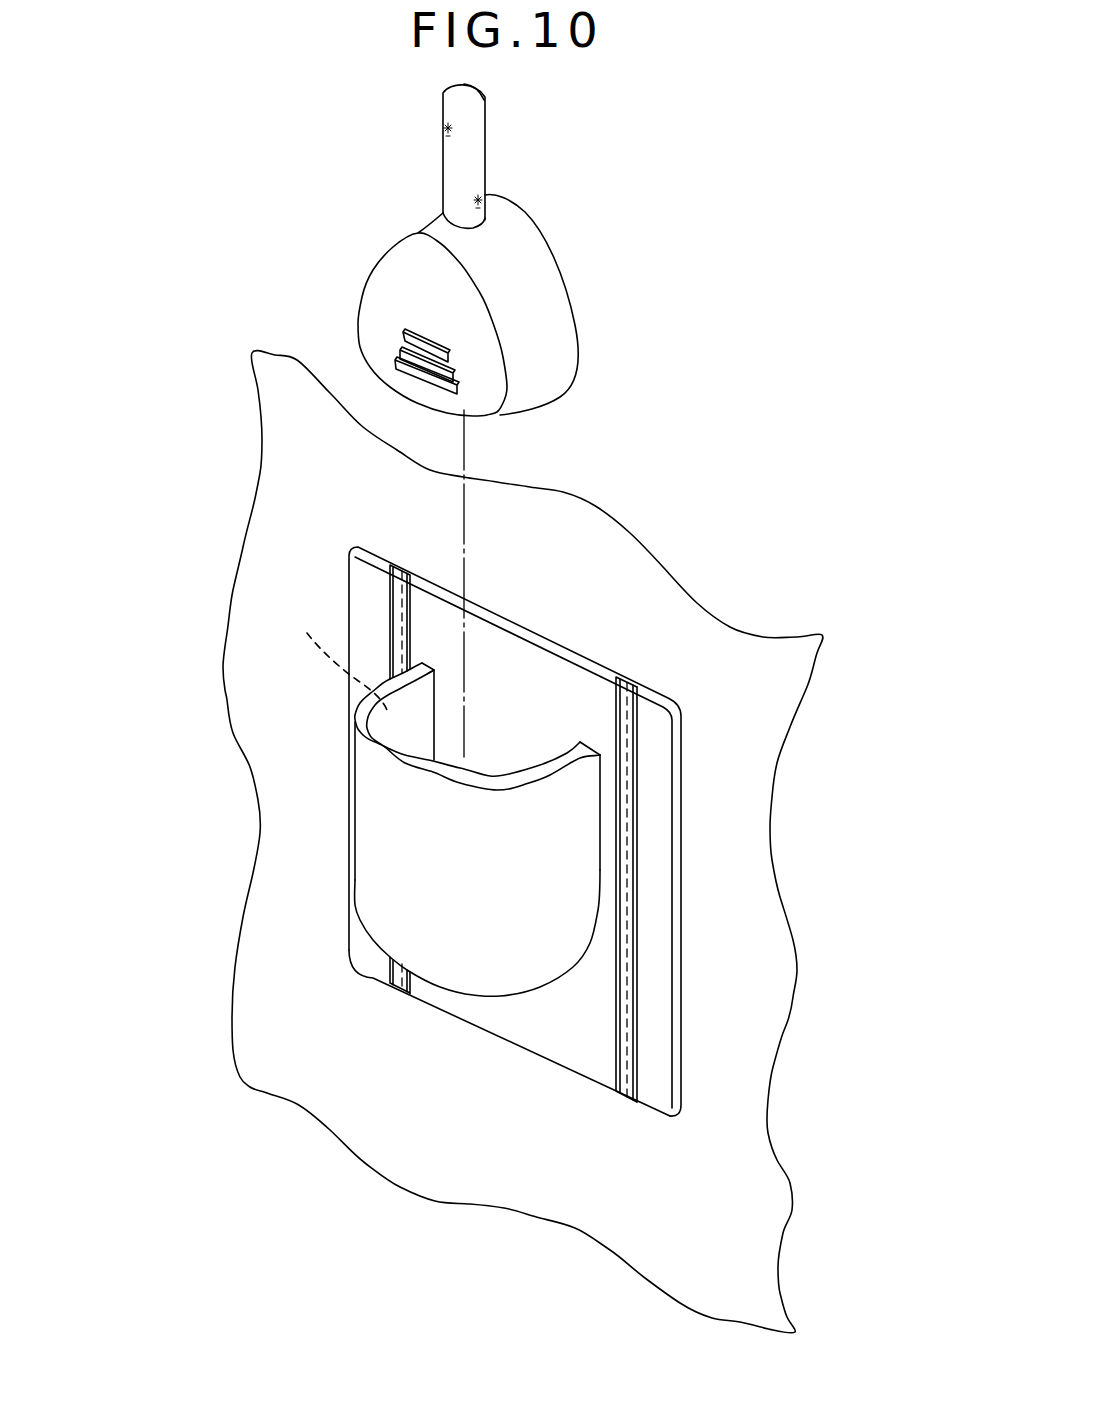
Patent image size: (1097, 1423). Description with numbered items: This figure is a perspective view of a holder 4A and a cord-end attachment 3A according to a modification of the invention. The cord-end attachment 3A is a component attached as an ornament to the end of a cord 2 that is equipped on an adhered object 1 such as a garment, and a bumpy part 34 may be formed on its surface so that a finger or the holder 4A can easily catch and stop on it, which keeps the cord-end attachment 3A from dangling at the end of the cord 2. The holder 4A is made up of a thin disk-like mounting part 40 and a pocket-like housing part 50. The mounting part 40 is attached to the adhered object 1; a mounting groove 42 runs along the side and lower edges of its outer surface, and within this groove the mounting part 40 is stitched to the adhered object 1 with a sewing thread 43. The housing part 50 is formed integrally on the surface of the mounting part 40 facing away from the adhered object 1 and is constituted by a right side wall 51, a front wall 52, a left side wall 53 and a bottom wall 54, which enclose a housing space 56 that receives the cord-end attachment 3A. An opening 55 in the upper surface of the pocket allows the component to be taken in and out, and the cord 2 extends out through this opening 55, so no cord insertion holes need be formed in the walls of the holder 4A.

The adhered object 1 is at (688, 630).
The cord 2 is at (473, 138).
The cord-end attachment 3A is at (560, 333).
The bumpy part 34 is at (403, 349).
The mounting part 40 is at (567, 677).
The mounting groove 42 is at (628, 823).
The sewing thread 43 is at (628, 778).
The housing part 50 is at (356, 696).
The right side wall 51 is at (340, 660).
The front wall 52 is at (383, 868).
The left side wall 53 is at (570, 862).
The bottom wall 54 is at (480, 997).
The opening 55 is at (440, 685).
The housing space 56 is at (420, 746).
The holder 4A is at (535, 1072).